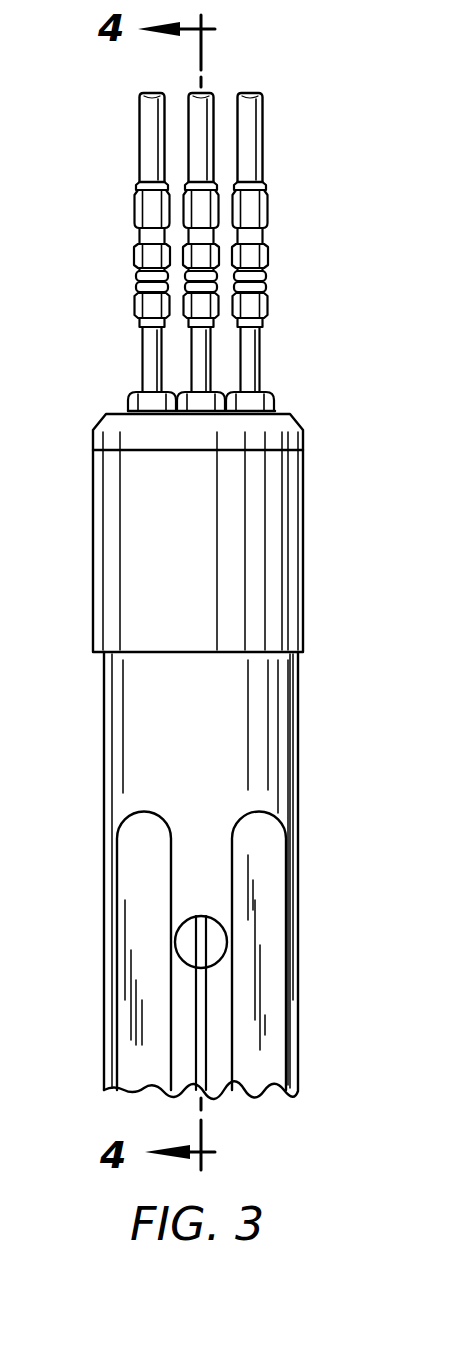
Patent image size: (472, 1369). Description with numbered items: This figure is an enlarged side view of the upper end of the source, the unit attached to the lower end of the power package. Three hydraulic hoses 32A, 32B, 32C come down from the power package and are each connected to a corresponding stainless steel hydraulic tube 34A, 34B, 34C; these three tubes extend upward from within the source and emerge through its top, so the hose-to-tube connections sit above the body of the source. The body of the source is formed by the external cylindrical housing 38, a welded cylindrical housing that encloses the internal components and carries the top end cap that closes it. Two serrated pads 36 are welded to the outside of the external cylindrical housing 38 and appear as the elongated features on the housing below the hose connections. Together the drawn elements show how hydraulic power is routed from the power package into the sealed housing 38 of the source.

The hydraulic hose 32A is at (146, 124).
The hydraulic hose 32B is at (192, 128).
The hydraulic hose 32C is at (256, 157).
The stainless steel hydraulic tube 34A is at (147, 354).
The stainless steel hydraulic tube 34B is at (204, 357).
The stainless steel hydraulic tube 34C is at (253, 375).
The serrated pad 36 is at (140, 852).
The external cylindrical housing 38 is at (298, 800).